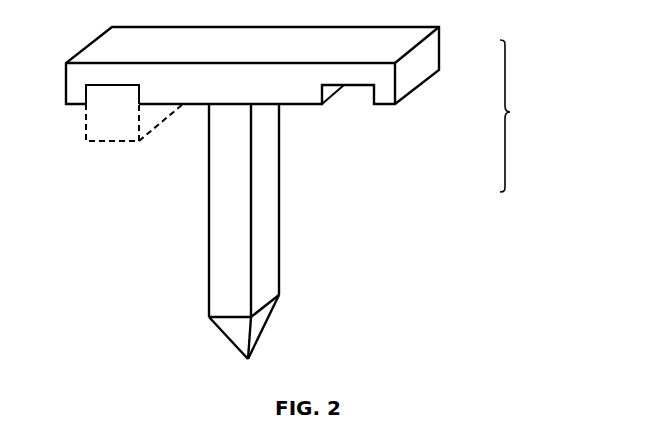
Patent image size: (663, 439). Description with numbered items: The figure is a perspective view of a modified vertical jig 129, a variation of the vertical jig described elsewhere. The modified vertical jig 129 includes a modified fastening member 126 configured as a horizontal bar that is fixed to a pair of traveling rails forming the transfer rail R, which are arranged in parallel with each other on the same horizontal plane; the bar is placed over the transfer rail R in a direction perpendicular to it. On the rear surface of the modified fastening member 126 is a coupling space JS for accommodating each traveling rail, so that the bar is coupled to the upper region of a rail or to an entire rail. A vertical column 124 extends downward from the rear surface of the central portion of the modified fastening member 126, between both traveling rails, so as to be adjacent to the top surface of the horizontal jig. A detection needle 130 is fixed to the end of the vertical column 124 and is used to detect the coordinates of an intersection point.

The modified fastening member 126 is at (436, 47).
The vertical column 124 is at (270, 187).
The detection needle 130 is at (260, 328).
The modified vertical jig 129 is at (521, 116).
The coupling space JS is at (357, 97).
The transfer rail R is at (109, 132).